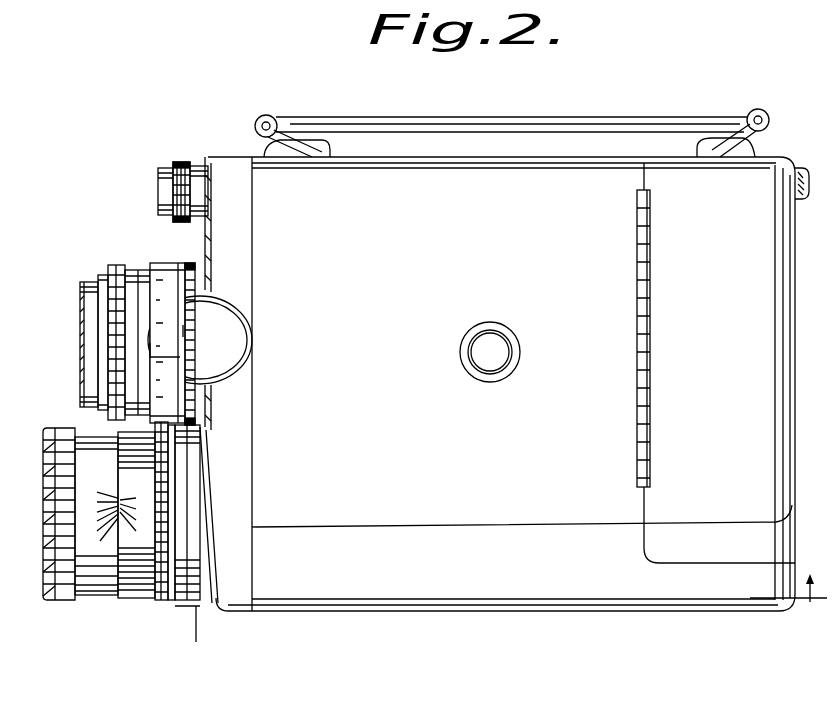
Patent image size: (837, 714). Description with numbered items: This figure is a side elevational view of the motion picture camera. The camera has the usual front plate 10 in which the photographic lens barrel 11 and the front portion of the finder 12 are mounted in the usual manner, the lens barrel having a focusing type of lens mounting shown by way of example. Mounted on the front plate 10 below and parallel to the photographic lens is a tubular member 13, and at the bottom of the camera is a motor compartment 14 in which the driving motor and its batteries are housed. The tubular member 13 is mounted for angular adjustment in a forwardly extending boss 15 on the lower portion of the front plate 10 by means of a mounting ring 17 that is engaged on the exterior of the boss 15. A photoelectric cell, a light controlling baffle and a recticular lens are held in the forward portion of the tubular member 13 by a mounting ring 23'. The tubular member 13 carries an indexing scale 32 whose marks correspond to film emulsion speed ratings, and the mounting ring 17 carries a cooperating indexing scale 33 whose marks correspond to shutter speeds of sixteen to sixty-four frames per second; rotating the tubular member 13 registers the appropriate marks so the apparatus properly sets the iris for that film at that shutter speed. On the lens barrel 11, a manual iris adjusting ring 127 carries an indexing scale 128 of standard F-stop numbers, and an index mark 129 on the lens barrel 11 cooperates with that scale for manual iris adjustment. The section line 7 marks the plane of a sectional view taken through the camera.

The front plate 10 is at (227, 160).
The photographic lens barrel 11 is at (120, 262).
The finder 12 is at (166, 165).
The manual iris adjusting ring 127 is at (176, 265).
The indexing scale 128 is at (180, 331).
The index mark 129 is at (180, 353).
The mounting ring 23' is at (45, 496).
The indexing scale 32 is at (100, 488).
The indexing scale 33 is at (134, 503).
The boss 15 is at (192, 490).
The tubular member 13 is at (100, 597).
The mounting ring 17 is at (165, 602).
The section line 7- 7 is at (501, 613).
The motor compartment 14 is at (382, 598).